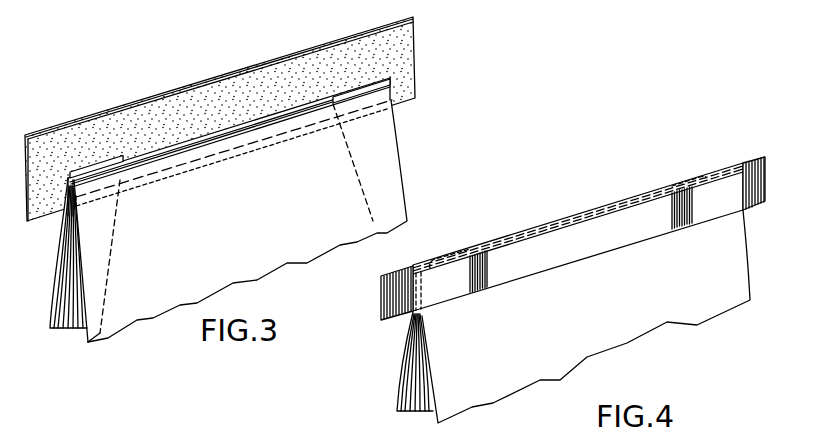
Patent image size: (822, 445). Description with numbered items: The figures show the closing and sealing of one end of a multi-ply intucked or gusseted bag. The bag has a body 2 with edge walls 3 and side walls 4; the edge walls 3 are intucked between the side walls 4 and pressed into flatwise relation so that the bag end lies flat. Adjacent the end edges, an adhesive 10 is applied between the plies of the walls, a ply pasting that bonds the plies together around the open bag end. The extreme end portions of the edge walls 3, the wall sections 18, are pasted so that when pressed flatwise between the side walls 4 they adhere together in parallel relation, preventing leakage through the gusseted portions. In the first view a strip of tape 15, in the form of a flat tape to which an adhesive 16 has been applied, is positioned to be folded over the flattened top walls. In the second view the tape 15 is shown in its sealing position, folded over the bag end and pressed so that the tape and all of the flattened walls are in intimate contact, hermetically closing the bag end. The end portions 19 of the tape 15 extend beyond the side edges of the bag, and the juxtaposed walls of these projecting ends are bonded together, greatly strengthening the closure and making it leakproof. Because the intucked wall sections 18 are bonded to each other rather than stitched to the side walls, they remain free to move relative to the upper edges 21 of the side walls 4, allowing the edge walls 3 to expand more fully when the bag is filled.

In FIG. 3, the body 2 is at (261, 262).
In FIG. 4, the body 2 is at (617, 333).
In FIG. 3, the edge walls 3 is at (75, 324).
In FIG. 4, the edge walls 3 is at (415, 361).
In FIG. 3, the side walls 4 is at (174, 160).
In FIG. 4, the side walls 4 is at (568, 270).
In FIG. 3, the adhesive 10 is at (232, 161).
In FIG. 3, the strip of tape 15 is at (230, 66).
In FIG. 4, the strip of tape 15 is at (546, 240).
In FIG. 3, the adhesive 16 is at (401, 44).
In FIG. 3, the wall sections 18 is at (97, 172).
In FIG. 4, the wall sections 18 is at (445, 267).
In FIG. 4, the end portions 19 is at (400, 293).
In FIG. 3, the upper edges 21 is at (280, 117).